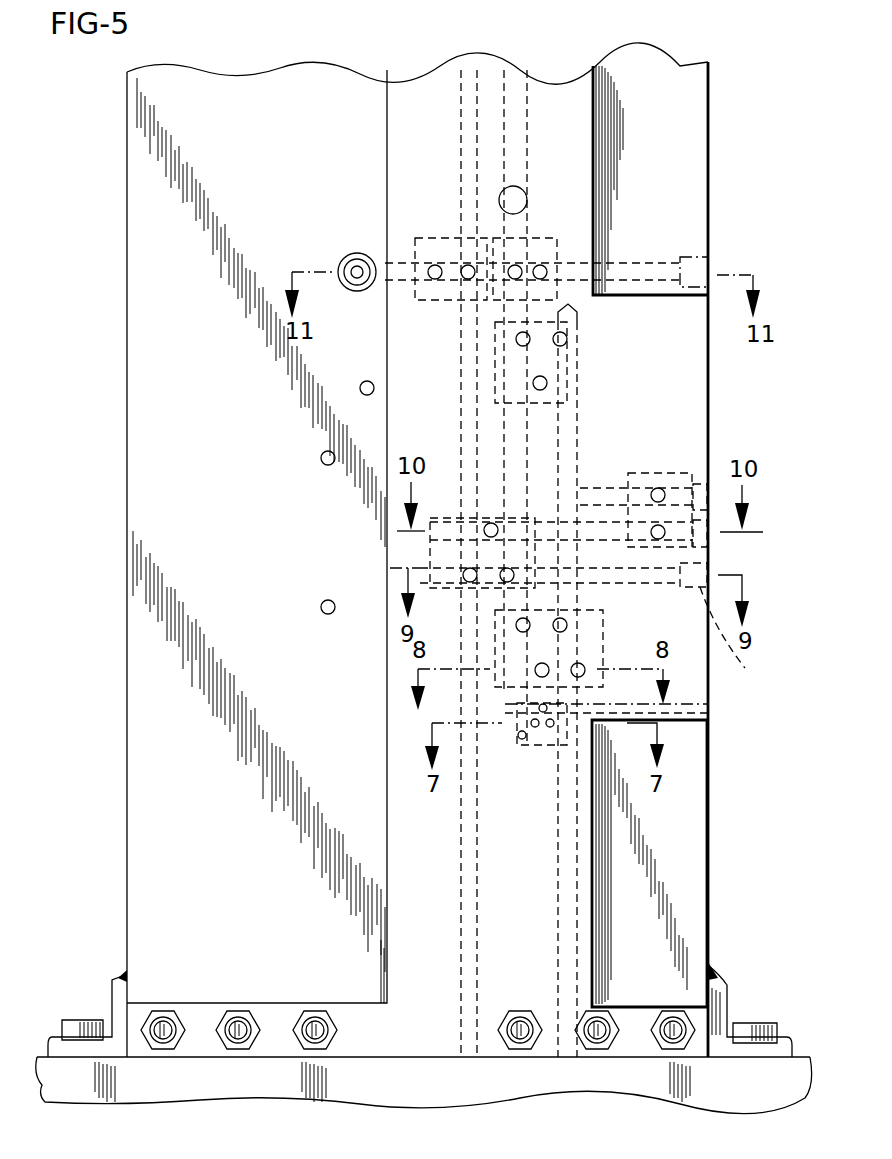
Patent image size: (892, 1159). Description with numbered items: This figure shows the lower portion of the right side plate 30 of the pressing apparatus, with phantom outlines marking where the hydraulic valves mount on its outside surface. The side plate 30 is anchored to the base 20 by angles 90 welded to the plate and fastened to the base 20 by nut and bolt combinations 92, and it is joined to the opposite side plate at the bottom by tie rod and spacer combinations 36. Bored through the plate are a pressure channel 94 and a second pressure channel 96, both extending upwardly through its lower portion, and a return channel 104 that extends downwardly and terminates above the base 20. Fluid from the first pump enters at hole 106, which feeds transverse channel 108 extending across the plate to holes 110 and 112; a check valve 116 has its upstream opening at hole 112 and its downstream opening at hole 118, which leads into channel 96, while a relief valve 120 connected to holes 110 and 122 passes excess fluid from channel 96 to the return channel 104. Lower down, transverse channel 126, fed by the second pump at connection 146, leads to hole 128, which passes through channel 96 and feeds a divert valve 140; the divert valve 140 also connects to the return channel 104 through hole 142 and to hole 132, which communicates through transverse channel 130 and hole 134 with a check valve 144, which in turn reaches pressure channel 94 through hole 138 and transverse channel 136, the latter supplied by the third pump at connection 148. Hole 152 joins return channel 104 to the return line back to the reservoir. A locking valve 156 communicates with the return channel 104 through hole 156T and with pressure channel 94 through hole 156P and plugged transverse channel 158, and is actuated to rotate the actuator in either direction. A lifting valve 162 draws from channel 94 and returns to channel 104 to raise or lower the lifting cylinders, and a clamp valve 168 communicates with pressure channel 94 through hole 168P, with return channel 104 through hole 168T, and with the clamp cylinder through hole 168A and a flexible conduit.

The base 20 is at (440, 1105).
The side plate 30 is at (700, 790).
The tie rod and spacer combinations 36 is at (163, 1050).
The angles 90 is at (112, 998).
The nut and bolt combinations 92 is at (80, 1038).
The pressure channel 94 is at (583, 440).
The second pressure channel 96 is at (467, 446).
The return channel 104 is at (517, 106).
The hole 106 is at (358, 262).
The transverse channel 108 is at (641, 262).
The hole 110 is at (540, 265).
The hole 112 is at (435, 265).
The check valve 116 is at (415, 290).
The hole 118 is at (466, 279).
The relief valve 120 is at (513, 243).
The hole 122 is at (520, 283).
The transverse channel 126 is at (583, 570).
The hole 128 is at (468, 568).
The transverse channel 130 is at (700, 575).
The hole 132 is at (491, 523).
The hole 134 is at (660, 538).
The transverse channel 136 is at (583, 490).
The hole 138 is at (658, 488).
The divert valve 140 is at (505, 568).
The hole 142 is at (430, 524).
The check valve 144 is at (702, 493).
The connection 146 is at (746, 634).
The connection 148 is at (705, 512).
The hole 152 is at (513, 186).
The locking valve 156 is at (540, 745).
The hole 156P is at (546, 704).
The hole 156T is at (520, 740).
The transverse channel 158 is at (690, 712).
The lifting valve 162 is at (603, 620).
The clamp valve 168 is at (575, 382).
The hole 168A is at (535, 386).
The hole 168P is at (568, 338).
The hole 168T is at (516, 343).